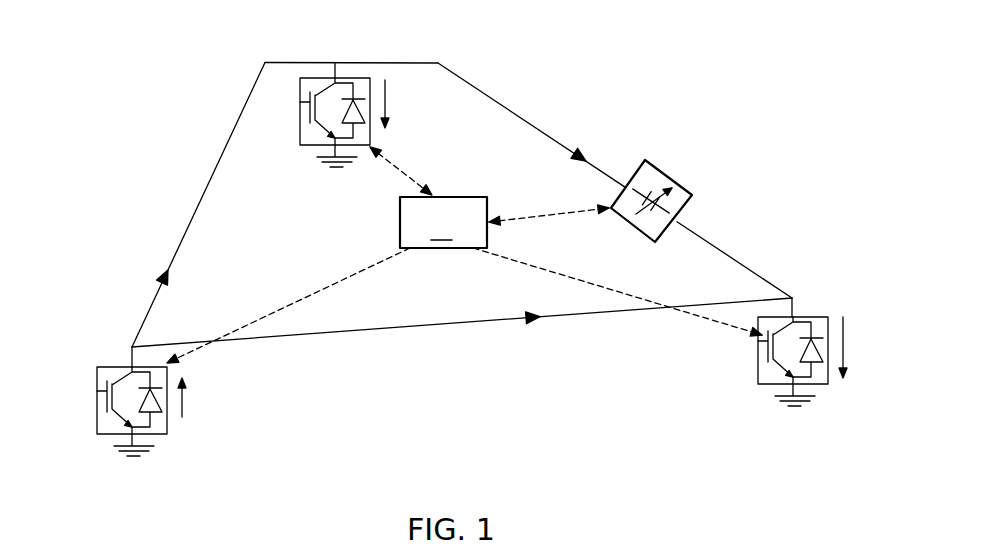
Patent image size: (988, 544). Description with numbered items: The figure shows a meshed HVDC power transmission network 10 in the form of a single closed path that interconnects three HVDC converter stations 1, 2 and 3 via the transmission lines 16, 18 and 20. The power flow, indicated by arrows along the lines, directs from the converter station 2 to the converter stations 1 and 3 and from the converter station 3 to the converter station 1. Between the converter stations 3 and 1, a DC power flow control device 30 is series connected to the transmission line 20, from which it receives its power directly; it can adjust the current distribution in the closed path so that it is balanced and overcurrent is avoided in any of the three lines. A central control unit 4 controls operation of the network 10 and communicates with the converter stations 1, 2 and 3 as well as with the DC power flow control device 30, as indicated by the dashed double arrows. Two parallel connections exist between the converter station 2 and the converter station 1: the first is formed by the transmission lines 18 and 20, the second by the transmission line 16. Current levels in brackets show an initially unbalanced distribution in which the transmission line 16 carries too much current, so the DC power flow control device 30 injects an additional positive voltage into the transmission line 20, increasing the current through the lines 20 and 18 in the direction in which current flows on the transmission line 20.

The meshed HVDC power transmission network 10 is at (170, 84).
The HVDC converter station 1 is at (825, 383).
The HVDC converter station 2 is at (113, 435).
The HVDC converter station 3 is at (313, 145).
The central control unit 4 is at (464, 255).
The transmission line 16 is at (405, 327).
The transmission line 18 is at (188, 232).
The transmission line 20 is at (522, 115).
The DC power flow control device 30 is at (688, 192).